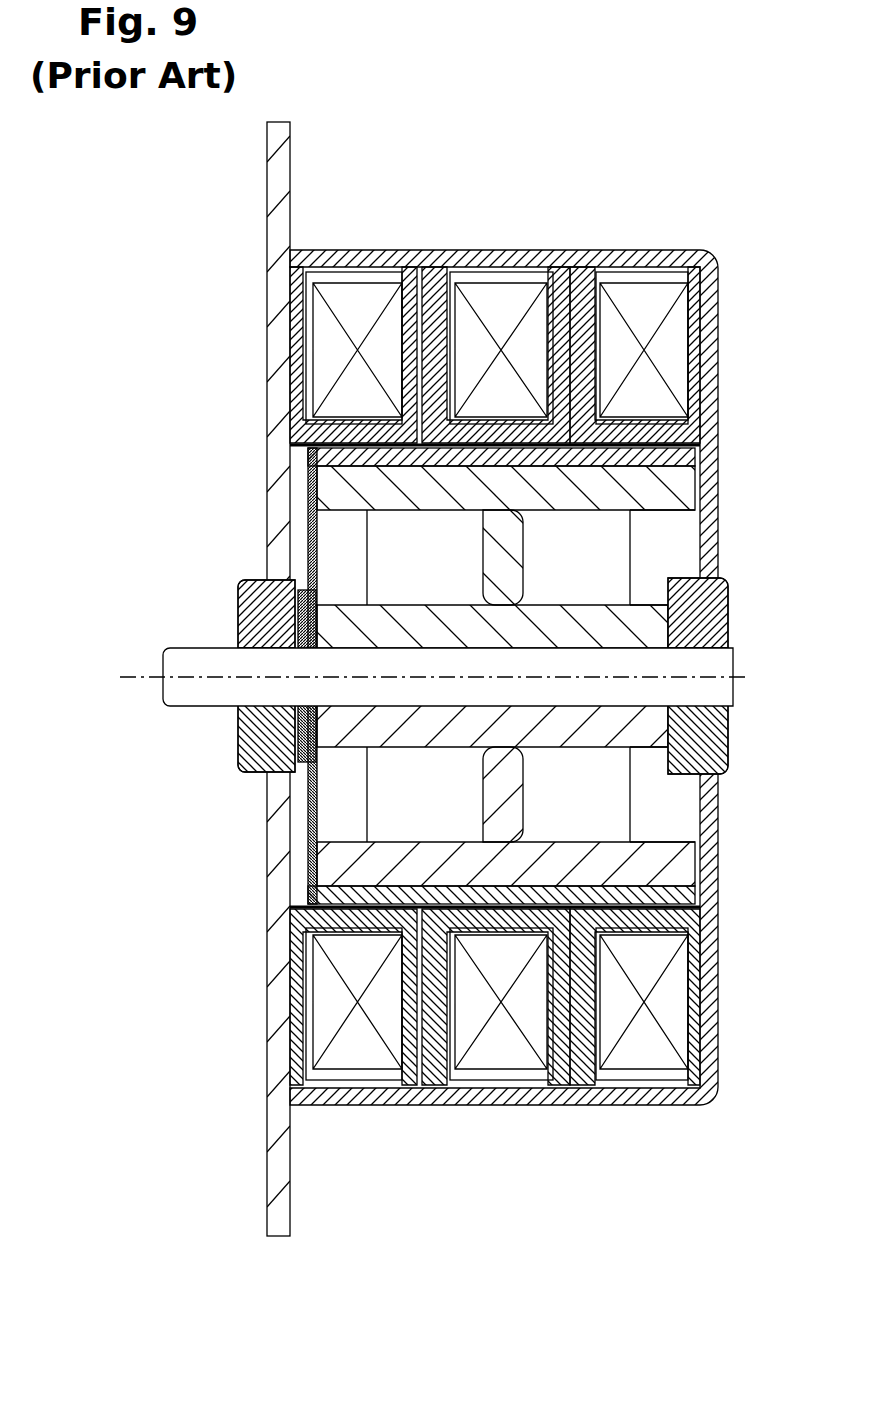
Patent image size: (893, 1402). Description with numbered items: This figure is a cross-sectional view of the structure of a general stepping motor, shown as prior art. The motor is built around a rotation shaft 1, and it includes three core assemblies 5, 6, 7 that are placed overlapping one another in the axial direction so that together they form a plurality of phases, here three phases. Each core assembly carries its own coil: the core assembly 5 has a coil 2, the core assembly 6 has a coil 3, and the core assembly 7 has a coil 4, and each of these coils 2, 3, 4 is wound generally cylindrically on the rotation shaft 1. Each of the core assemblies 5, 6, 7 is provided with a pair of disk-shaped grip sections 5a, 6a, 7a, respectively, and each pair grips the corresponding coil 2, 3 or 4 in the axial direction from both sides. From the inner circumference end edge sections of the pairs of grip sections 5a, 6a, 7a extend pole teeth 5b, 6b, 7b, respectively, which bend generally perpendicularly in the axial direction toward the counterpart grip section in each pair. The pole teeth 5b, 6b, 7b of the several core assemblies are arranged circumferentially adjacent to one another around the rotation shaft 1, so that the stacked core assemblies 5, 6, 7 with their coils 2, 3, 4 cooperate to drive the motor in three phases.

The rotation shaft 1 is at (207, 665).
The coil 2 is at (355, 330).
The coil 3 is at (503, 318).
The coil 4 is at (645, 318).
The core assembly 5 is at (360, 1110).
The core assembly 6 is at (527, 1110).
The core assembly 7 is at (641, 1110).
The grip section 5a is at (290, 330).
The grip section 6a is at (440, 272).
The grip section 7a is at (592, 275).
The pole teeth 5b is at (378, 912).
The pole teeth 6b is at (540, 920).
The pole teeth 7b is at (652, 918).